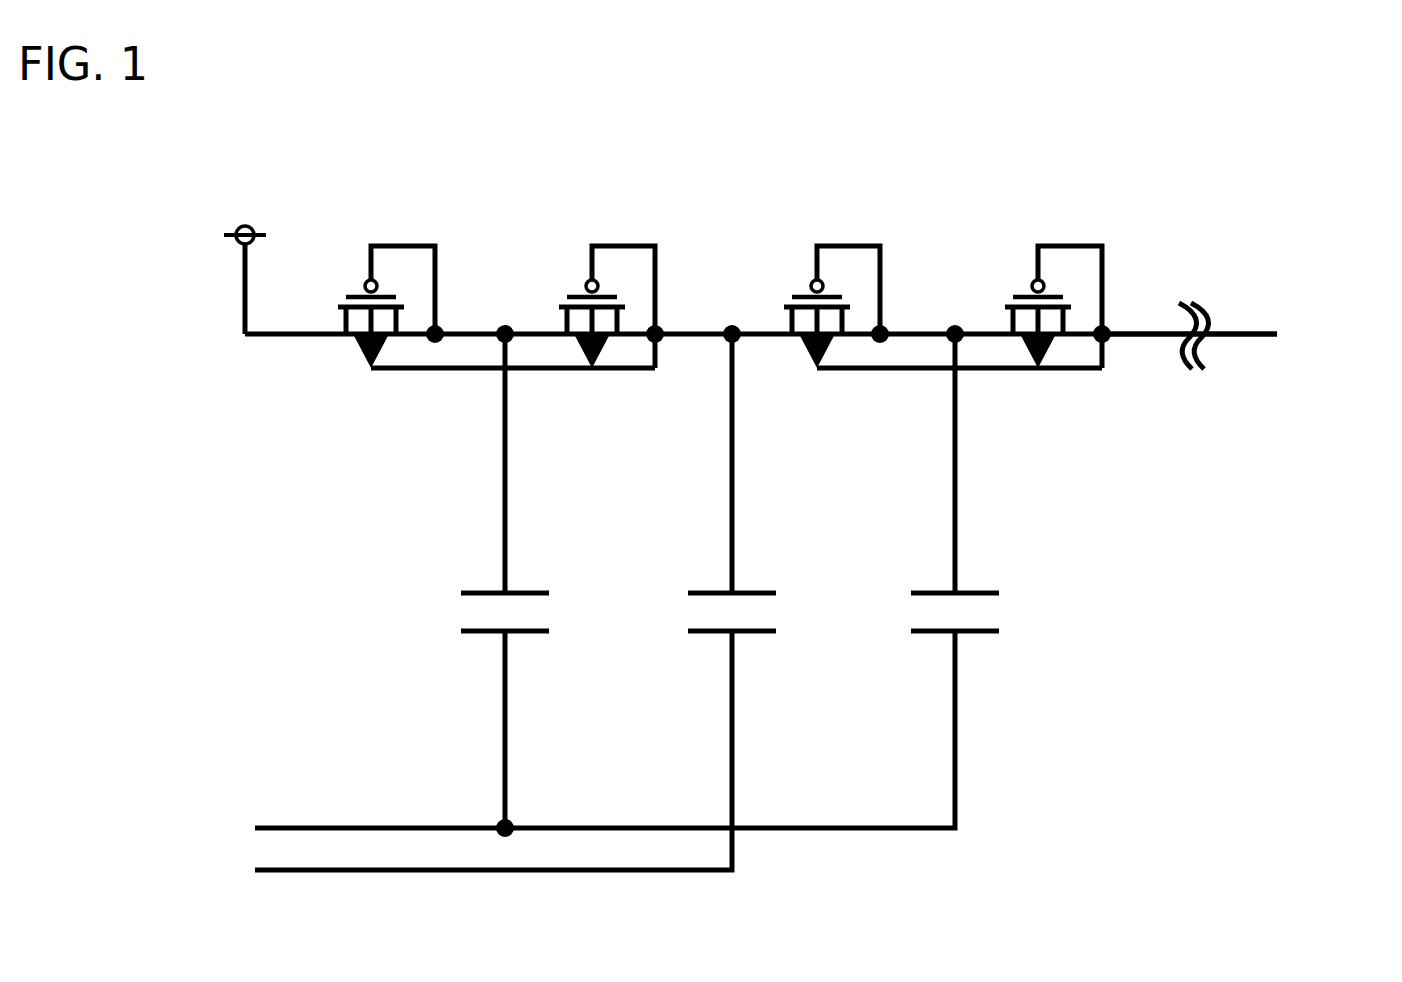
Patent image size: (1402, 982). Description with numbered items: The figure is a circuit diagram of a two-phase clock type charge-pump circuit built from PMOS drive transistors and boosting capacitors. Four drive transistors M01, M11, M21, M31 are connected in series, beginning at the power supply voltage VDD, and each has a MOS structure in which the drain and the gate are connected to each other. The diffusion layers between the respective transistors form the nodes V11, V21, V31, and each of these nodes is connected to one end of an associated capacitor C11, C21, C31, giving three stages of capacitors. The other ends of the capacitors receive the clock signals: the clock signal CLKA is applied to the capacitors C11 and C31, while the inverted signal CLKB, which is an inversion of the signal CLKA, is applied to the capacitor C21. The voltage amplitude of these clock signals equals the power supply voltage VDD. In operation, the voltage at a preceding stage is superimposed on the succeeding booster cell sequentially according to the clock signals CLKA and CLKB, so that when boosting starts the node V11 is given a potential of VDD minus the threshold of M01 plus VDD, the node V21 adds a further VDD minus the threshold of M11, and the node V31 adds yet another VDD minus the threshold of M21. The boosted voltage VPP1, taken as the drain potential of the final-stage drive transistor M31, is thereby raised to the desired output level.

The power supply voltage VDD is at (248, 250).
The drive transistor M01 is at (386, 282).
The drive transistor M11 is at (607, 282).
The drive transistor M21 is at (832, 282).
The drive transistor M31 is at (1053, 282).
The node V11 is at (508, 434).
The node V21 is at (734, 434).
The node V31 is at (955, 434).
The capacitor C11 is at (465, 613).
The capacitor C21 is at (690, 614).
The capacitor C31 is at (916, 615).
The clock signal CLKA is at (550, 738).
The inverted signal CLKB is at (438, 764).
The boosted voltage VPP1 is at (1241, 336).